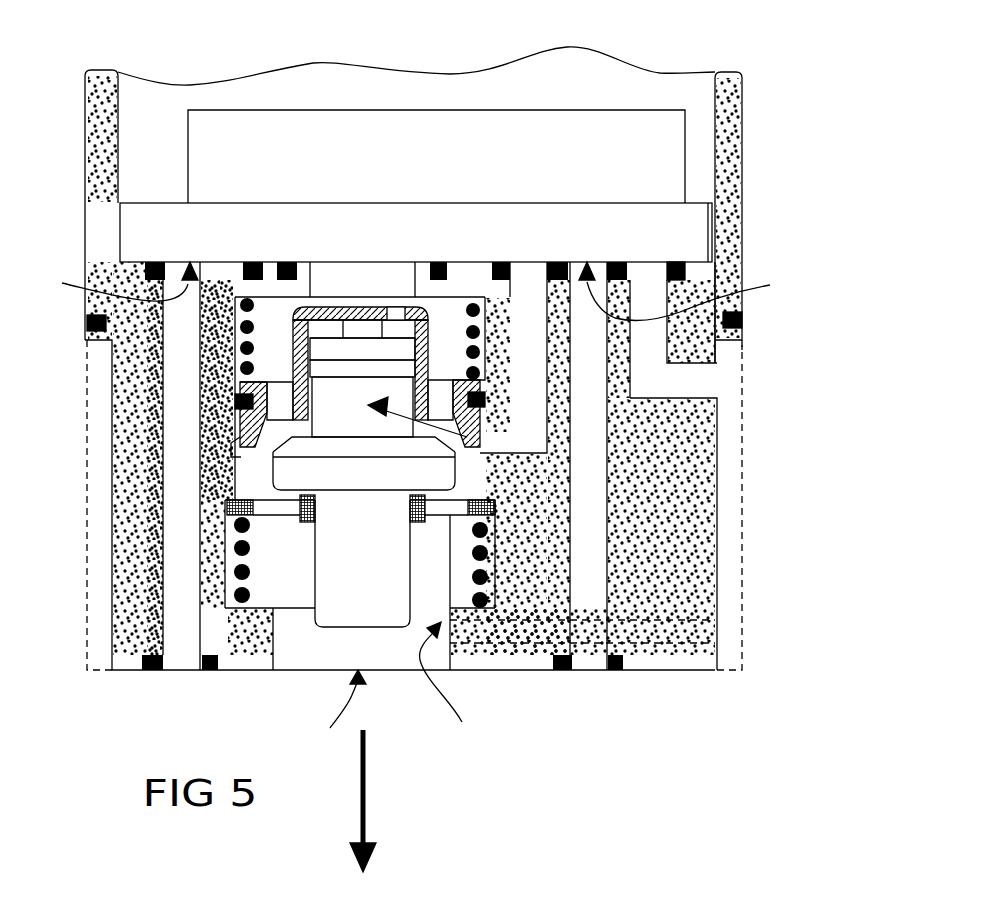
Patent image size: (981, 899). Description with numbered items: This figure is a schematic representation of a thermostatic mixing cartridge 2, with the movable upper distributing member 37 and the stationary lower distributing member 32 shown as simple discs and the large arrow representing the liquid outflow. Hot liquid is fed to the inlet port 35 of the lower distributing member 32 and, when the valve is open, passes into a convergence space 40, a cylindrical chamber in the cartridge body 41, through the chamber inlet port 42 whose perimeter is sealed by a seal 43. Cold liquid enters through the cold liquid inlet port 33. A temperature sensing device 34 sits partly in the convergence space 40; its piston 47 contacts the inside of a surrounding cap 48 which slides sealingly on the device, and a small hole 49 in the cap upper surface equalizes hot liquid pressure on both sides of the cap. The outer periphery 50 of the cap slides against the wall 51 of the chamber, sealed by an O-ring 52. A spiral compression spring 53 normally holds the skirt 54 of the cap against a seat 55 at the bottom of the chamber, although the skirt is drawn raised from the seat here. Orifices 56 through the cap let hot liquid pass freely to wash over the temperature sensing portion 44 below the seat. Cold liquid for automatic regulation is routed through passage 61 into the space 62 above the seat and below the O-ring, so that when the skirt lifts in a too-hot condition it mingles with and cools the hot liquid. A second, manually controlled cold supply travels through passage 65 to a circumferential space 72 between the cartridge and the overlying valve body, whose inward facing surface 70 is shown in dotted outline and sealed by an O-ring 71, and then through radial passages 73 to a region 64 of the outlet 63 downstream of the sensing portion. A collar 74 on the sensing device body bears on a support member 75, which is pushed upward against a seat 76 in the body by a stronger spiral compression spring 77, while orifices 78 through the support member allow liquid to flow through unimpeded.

The valve assembly 2 is at (160, 203).
The lower distributing member 32 is at (556, 216).
The cold liquid inlet port 33 is at (691, 291).
The temperature sensing device 34 is at (527, 290).
The hot liquid inlet port 35 is at (113, 296).
The upper distributing member 37 is at (305, 135).
The convergence space 40 is at (717, 358).
The cartridge body 41 is at (742, 181).
The chamber inlet port 42 is at (360, 279).
The seal 43 is at (422, 313).
The temperature sensing portion 44 is at (333, 598).
The piston 47 is at (292, 332).
The cap 48 is at (240, 348).
The small hole 49 is at (398, 313).
The outer periphery 50 is at (240, 404).
The wall 51 is at (236, 397).
The O-ring 52 is at (467, 437).
The spiral compression spring 53 is at (452, 334).
The skirt 54 is at (268, 455).
The seat 55 is at (455, 487).
The orifice 56 is at (484, 402).
The passage 61 is at (538, 262).
The space 62 is at (240, 427).
The outlet 63 is at (335, 716).
The region 64 is at (448, 689).
The passage 65 is at (647, 287).
The valve body inward facing surface 70 is at (742, 562).
The O-ring 71 is at (742, 318).
The circumferential space 72 is at (730, 523).
The radial passage 73 is at (647, 627).
The collar 74 is at (455, 505).
The support member 75 is at (427, 472).
The seat 76 is at (240, 500).
The spiral compression spring 77 is at (490, 577).
The orifice 78 is at (270, 510).